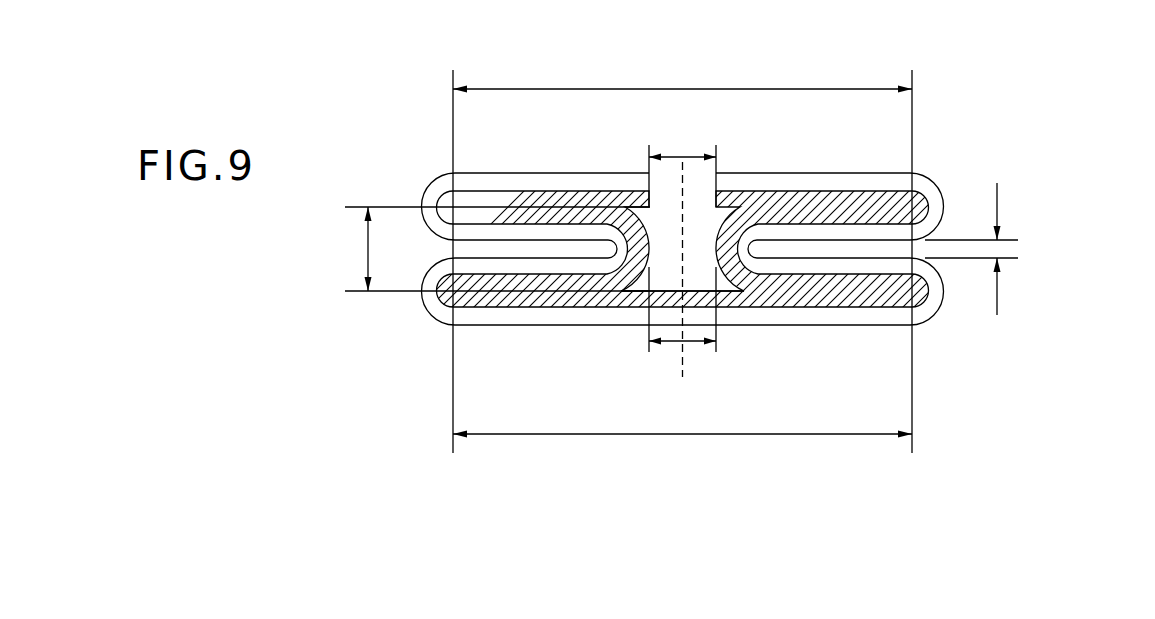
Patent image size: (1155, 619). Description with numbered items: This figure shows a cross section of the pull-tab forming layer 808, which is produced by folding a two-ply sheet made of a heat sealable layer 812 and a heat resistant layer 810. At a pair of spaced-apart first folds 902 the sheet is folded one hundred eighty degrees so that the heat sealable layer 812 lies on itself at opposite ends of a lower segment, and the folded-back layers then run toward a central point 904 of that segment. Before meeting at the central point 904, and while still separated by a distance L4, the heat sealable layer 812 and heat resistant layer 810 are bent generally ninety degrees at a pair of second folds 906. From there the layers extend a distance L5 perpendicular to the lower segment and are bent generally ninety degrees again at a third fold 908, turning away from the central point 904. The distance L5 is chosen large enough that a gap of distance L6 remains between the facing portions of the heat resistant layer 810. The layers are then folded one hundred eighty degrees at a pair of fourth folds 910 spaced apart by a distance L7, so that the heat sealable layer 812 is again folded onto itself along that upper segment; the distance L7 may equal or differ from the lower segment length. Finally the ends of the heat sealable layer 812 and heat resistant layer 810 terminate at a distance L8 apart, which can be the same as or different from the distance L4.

The pull-tab forming layer 808 is at (1067, 152).
The heat resistant layer 810 is at (813, 180).
The heat sealable layer 812 is at (858, 197).
The first folds 902 is at (425, 318).
The central point 904 is at (680, 365).
The second folds 906 is at (637, 290).
The third fold 908 is at (610, 176).
The fourth folds 910 is at (433, 178).
The distance between second folds L4 is at (690, 345).
The perpendicular distance L5 is at (367, 250).
The distance between facing portions of heat resistant layer L6 is at (998, 252).
The distance between fourth folds L7 is at (807, 88).
The termination distance L8 is at (690, 155).